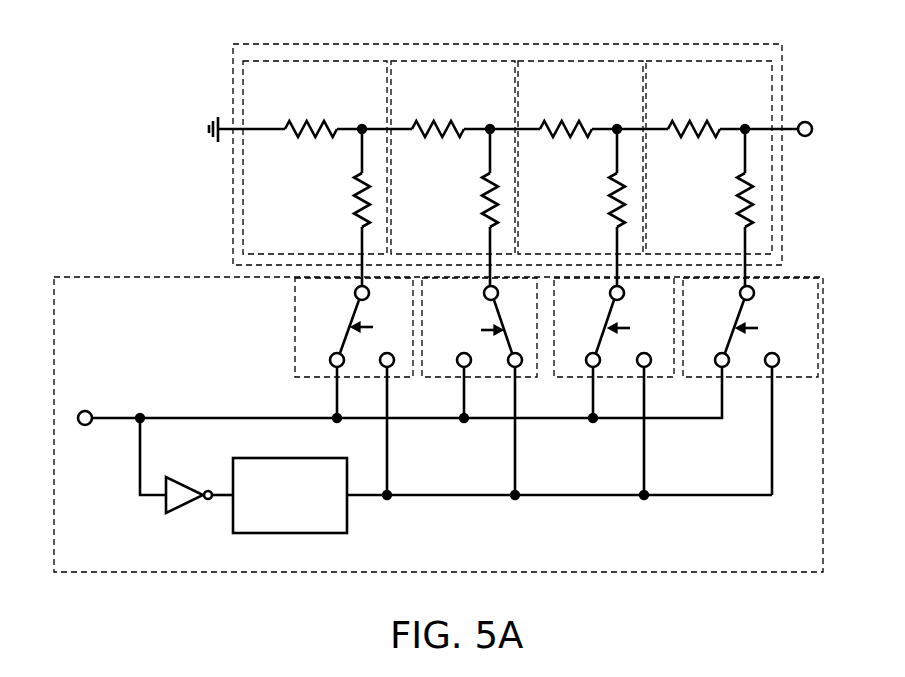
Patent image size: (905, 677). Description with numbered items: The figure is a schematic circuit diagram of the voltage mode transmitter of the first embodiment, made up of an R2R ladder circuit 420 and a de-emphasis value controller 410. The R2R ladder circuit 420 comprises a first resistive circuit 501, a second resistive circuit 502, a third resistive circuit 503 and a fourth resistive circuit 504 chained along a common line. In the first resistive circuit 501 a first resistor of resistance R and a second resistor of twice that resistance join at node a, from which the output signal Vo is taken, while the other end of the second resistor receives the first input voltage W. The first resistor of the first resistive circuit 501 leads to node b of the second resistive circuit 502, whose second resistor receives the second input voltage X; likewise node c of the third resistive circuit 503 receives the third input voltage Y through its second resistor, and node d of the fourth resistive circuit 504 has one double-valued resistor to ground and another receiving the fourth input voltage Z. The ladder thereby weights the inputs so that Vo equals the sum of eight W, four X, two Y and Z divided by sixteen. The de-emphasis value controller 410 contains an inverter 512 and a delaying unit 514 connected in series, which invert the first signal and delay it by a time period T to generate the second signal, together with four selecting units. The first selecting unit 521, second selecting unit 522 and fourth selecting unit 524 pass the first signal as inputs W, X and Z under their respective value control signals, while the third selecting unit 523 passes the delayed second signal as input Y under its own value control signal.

The R2R ladder circuit 420 is at (236, 46).
The fourth resistive circuit 504 is at (315, 173).
The third resistive circuit 503 is at (453, 173).
The second resistive circuit 502 is at (580, 173).
The first resistive circuit 501 is at (709, 173).
The de-emphasis value controller 410 is at (101, 279).
The fourth selecting unit 524 is at (354, 389).
The third selecting unit 523 is at (479, 389).
The second selecting unit 522 is at (614, 389).
The first selecting unit 521 is at (750, 386).
The inverter 512 is at (168, 510).
The delaying unit 514 is at (240, 531).